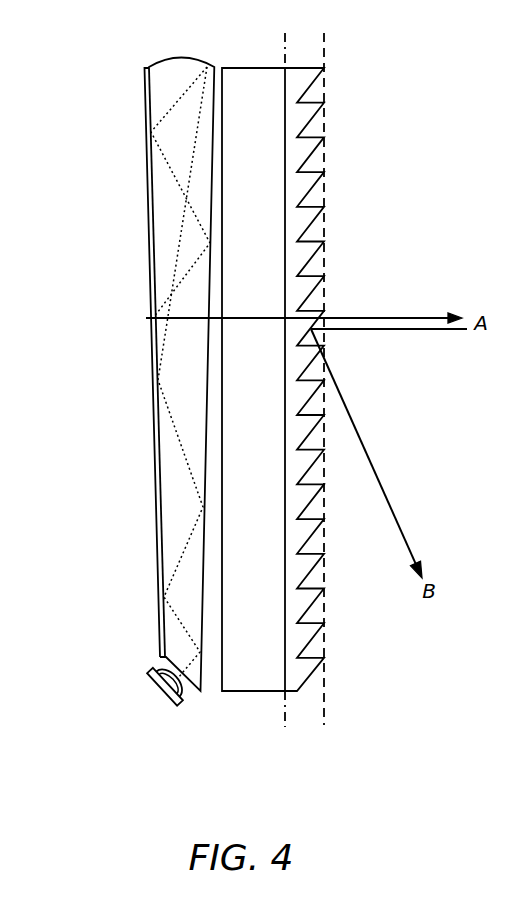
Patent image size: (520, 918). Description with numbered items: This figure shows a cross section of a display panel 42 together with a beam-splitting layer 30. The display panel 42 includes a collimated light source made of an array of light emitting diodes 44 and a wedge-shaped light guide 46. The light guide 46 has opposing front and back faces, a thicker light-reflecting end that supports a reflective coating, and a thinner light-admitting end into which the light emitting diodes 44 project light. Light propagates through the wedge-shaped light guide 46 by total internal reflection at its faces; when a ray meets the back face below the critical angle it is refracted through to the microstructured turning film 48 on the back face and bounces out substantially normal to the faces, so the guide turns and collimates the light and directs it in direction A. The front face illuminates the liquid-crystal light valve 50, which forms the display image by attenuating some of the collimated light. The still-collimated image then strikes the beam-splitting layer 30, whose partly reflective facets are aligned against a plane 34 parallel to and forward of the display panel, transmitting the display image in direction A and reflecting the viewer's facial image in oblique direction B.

The beam-splitting layer 30 is at (295, 741).
The plane 34 is at (325, 50).
The display panel 42 is at (147, 733).
The array of light emitting diodes 44 is at (148, 673).
The wedge-shaped light guide 46 is at (173, 388).
The microstructured turning film 48 is at (153, 413).
The liquid-crystal light valve 50 is at (243, 390).